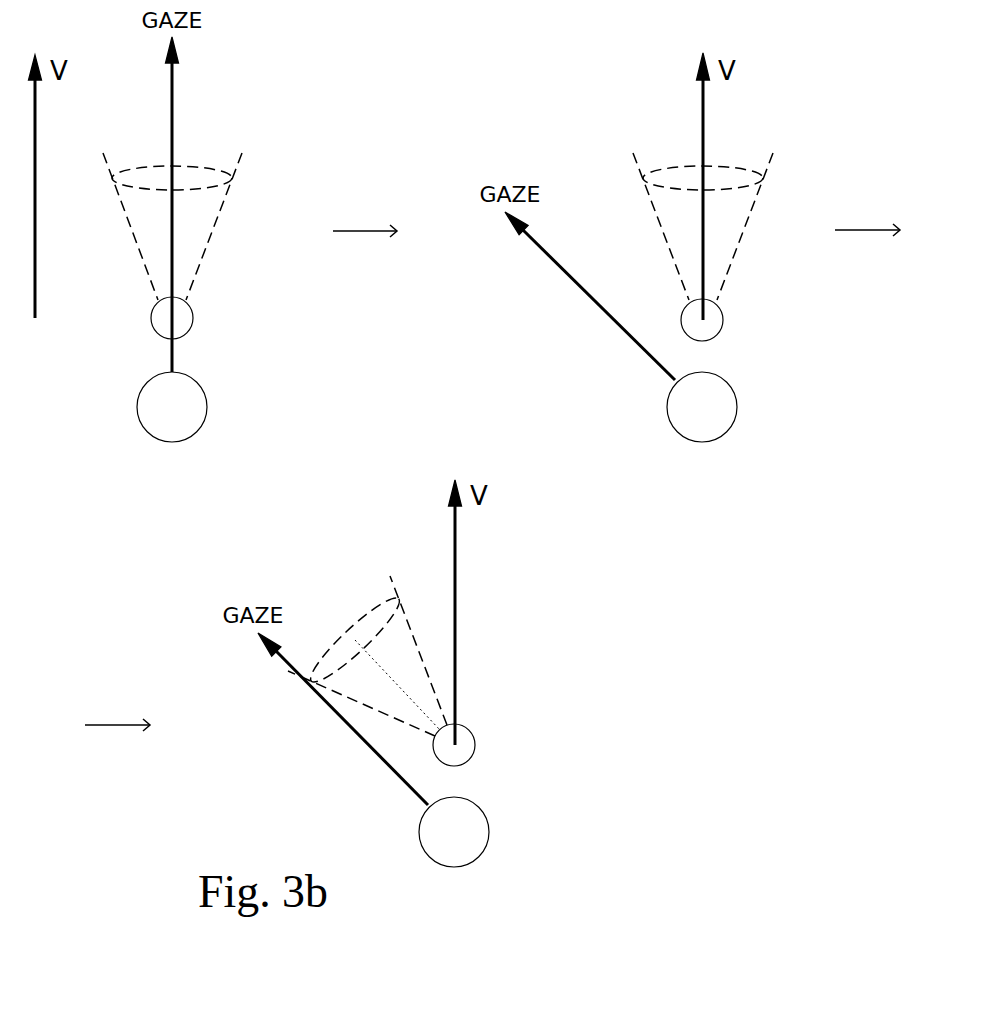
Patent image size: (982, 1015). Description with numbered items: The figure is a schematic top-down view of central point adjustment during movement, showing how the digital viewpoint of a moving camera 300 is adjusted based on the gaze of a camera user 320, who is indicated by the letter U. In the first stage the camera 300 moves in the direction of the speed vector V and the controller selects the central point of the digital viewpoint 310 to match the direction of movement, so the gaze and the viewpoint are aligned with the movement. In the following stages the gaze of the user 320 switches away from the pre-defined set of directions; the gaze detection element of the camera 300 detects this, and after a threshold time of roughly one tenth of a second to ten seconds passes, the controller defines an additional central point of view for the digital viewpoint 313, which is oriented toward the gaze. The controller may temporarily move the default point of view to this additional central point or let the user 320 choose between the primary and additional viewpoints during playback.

The camera 300 is at (194, 317).
The digital viewpoint 310 is at (187, 248).
The digital viewpoint 313 is at (352, 643).
The camera user 320 is at (207, 405).